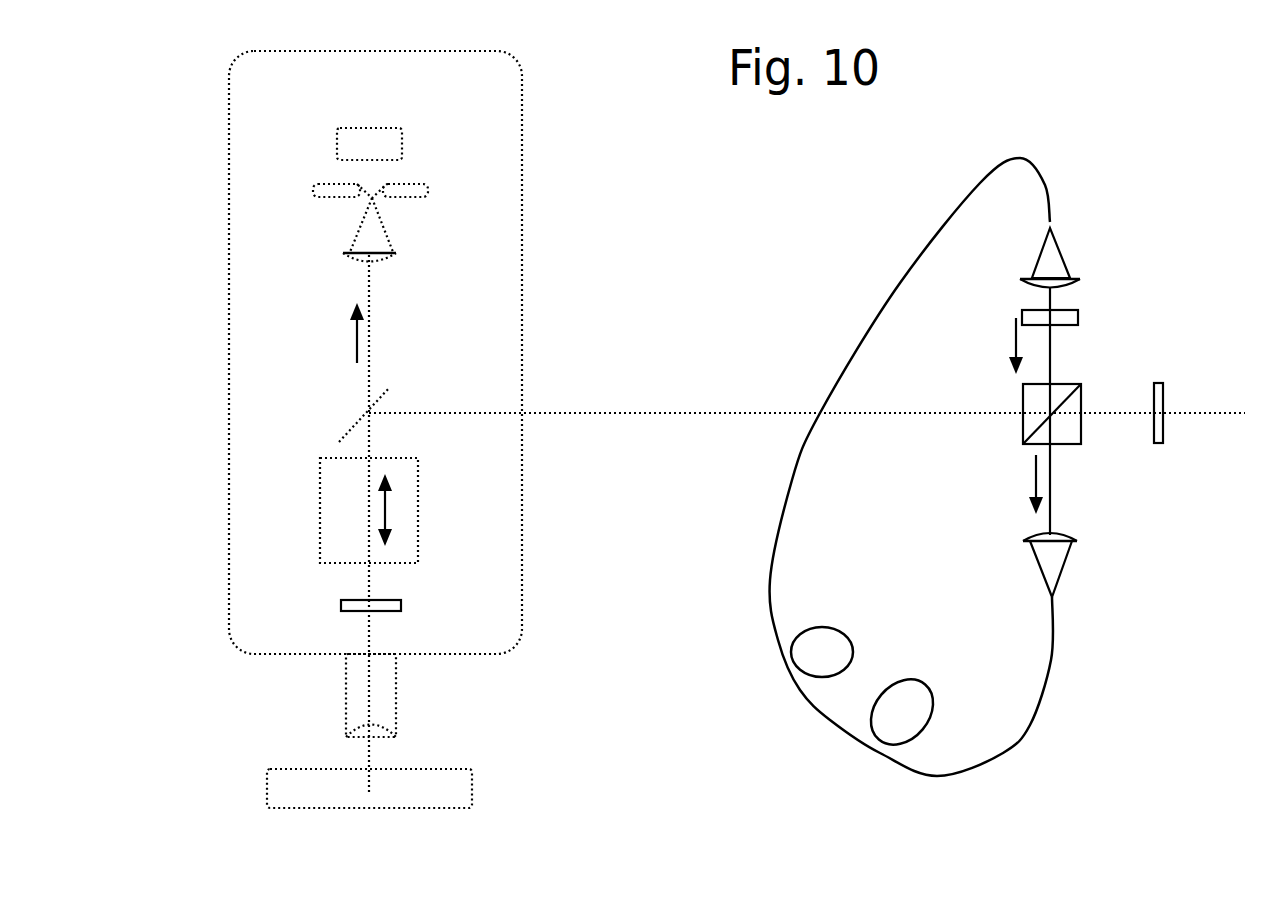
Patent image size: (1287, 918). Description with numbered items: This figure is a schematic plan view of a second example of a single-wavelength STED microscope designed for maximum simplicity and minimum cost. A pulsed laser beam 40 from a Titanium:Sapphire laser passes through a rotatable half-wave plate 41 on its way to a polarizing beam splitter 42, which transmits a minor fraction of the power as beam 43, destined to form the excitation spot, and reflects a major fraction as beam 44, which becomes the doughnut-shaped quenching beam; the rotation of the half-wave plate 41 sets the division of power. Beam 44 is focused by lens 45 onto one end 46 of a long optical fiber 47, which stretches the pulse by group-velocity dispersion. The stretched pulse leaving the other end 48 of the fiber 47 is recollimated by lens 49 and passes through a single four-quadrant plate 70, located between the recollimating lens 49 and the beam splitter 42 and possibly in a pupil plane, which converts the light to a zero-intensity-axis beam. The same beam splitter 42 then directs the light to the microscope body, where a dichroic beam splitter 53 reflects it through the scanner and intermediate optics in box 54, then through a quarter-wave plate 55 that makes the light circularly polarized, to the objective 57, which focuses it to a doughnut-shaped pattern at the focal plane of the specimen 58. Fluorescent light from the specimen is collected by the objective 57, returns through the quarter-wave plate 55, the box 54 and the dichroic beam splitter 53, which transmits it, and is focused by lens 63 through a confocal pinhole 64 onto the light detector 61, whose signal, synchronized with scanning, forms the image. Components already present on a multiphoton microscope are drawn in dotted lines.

The laser beam 40 is at (1217, 408).
The rotatable half-wave plate 41 is at (1160, 378).
The polarizing beam splitter 42 is at (1016, 430).
The beam 43 is at (913, 412).
The beam 44 is at (1055, 487).
The lens 45 is at (1072, 533).
The end 46 is at (1057, 597).
The optical fiber 47 is at (1005, 752).
The end 48 is at (1058, 230).
The lens 49 is at (1075, 283).
The four-quadrant plate 70 is at (1078, 322).
The dichroic beam splitter 53 is at (392, 387).
The box 54 is at (410, 457).
The quarter-wave plate 55 is at (400, 600).
The objective 57 is at (395, 700).
The specimen 58 is at (473, 787).
The light detector 61 is at (392, 126).
The lens 63 is at (393, 253).
The confocal pinhole 64 is at (418, 186).